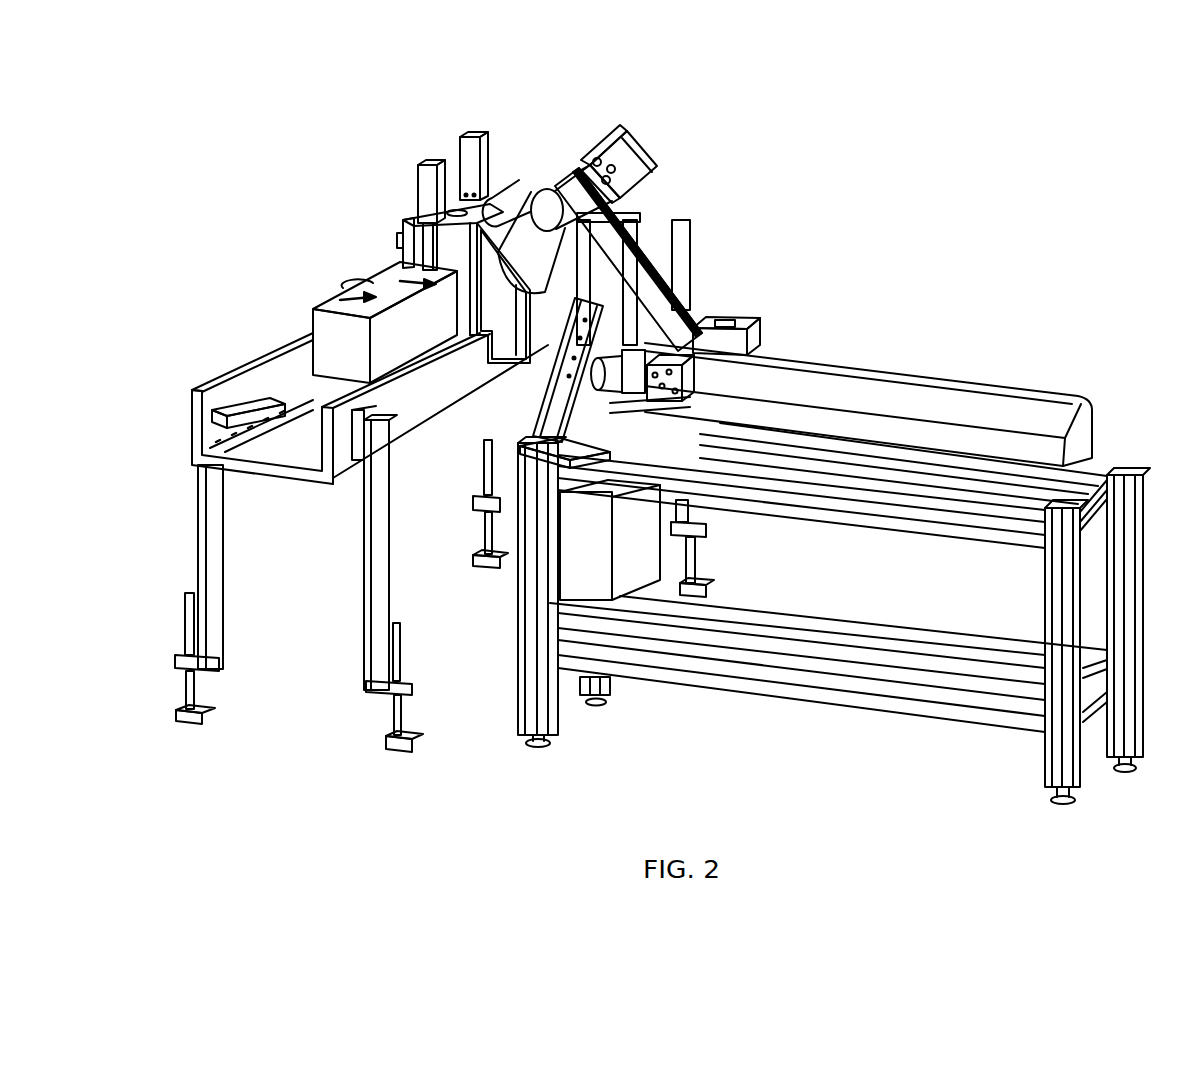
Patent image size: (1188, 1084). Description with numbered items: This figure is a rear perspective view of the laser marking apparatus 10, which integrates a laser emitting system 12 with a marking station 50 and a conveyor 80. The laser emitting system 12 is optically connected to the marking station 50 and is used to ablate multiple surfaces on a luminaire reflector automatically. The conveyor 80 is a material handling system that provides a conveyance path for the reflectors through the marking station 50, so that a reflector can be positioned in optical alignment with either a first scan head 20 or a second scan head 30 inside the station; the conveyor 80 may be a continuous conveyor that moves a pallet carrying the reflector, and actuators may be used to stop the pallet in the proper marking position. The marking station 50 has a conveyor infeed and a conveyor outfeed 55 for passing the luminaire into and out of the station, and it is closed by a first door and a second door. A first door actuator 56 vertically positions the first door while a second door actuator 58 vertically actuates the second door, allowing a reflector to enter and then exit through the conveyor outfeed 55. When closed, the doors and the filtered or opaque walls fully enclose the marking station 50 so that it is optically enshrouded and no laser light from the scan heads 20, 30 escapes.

The laser marking apparatus 10 is at (757, 205).
The laser emitting system 12 is at (1012, 392).
The first scan head 20 is at (634, 153).
The second scan head 30 is at (748, 330).
The marking station 50 is at (368, 236).
The conveyor outfeed 55 is at (313, 317).
The first door actuator 56 is at (423, 177).
The second door actuator 58 is at (482, 153).
The conveyor 80 is at (228, 373).